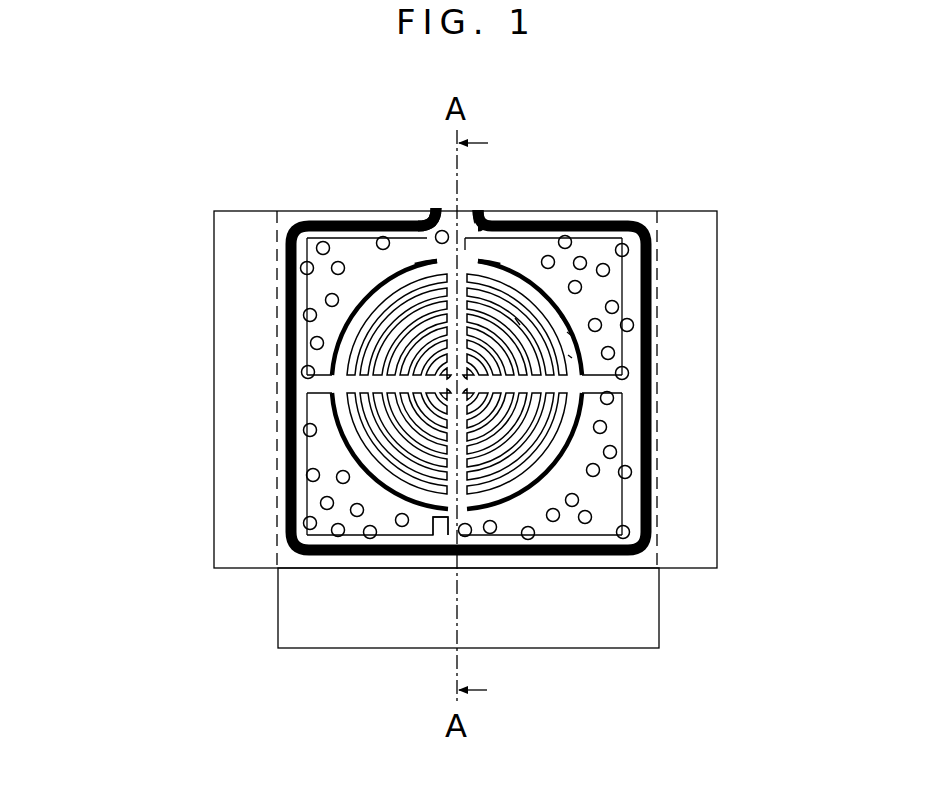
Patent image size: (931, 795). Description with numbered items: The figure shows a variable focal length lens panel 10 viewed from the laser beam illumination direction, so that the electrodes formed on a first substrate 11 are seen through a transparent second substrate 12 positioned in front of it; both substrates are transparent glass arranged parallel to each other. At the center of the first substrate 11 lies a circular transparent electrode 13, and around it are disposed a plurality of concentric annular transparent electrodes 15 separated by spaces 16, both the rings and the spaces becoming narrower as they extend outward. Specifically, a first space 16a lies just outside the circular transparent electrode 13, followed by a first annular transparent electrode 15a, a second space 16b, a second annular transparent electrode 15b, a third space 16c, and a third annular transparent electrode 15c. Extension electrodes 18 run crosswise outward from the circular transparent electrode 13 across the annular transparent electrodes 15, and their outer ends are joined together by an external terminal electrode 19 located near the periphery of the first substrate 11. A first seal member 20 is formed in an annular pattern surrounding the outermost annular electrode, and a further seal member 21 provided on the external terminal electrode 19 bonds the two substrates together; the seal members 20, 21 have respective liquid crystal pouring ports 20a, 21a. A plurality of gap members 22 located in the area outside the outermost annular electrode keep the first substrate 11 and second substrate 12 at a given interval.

The variable focal length lens panel 10 is at (200, 212).
The first substrate 11 is at (590, 638).
The second substrate 12 is at (230, 468).
The circular transparent electrode 13 is at (452, 335).
The annular transparent electrodes 15 is at (535, 432).
The first annular transparent electrode 15a is at (505, 332).
The second annular transparent electrode 15b is at (520, 325).
The third annular transparent electrode 15c is at (572, 336).
The spaces 16 is at (535, 405).
The first space 16a is at (493, 275).
The second space 16b is at (565, 322).
The third space 16c is at (572, 358).
The extension electrodes 18 is at (388, 388).
The external terminal electrode 19 is at (298, 445).
The first seal member 20 is at (433, 535).
The liquid crystal pouring port 20a is at (453, 362).
The seal member 21 is at (337, 558).
The liquid crystal pouring port 21a is at (466, 220).
The gap members 22 is at (615, 354).